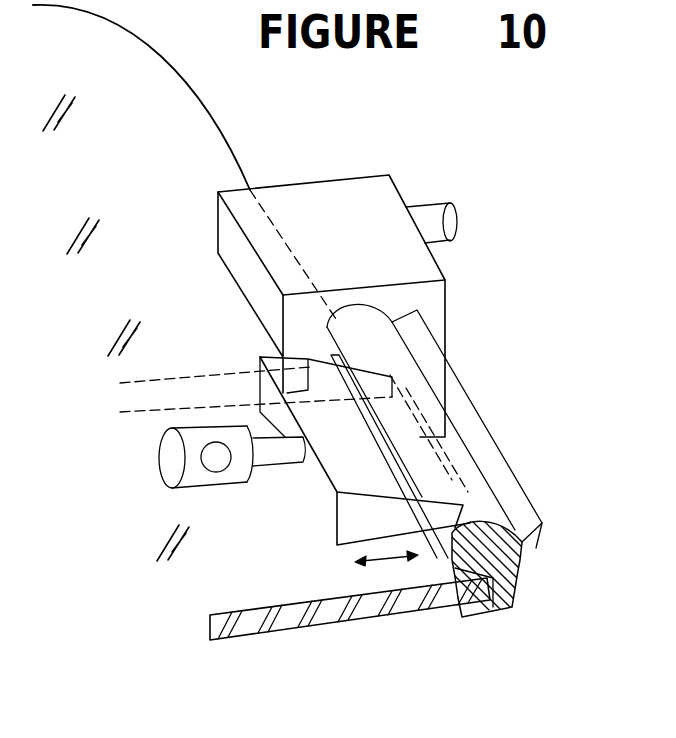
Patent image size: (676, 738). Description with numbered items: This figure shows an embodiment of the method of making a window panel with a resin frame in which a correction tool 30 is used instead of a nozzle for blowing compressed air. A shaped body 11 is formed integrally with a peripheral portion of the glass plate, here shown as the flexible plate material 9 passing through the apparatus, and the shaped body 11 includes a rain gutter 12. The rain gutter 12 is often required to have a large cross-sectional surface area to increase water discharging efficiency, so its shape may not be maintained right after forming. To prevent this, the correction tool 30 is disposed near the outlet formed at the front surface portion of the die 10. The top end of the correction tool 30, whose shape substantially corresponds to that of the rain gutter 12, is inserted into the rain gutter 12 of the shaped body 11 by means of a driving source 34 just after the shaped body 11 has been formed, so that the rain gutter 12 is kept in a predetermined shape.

The tape 9 is at (180, 143).
The die 10 is at (342, 216).
The shaped body 11 is at (477, 492).
The rain gutter 12 is at (516, 570).
The correction tool 30 is at (325, 488).
The driving source 34 is at (173, 466).